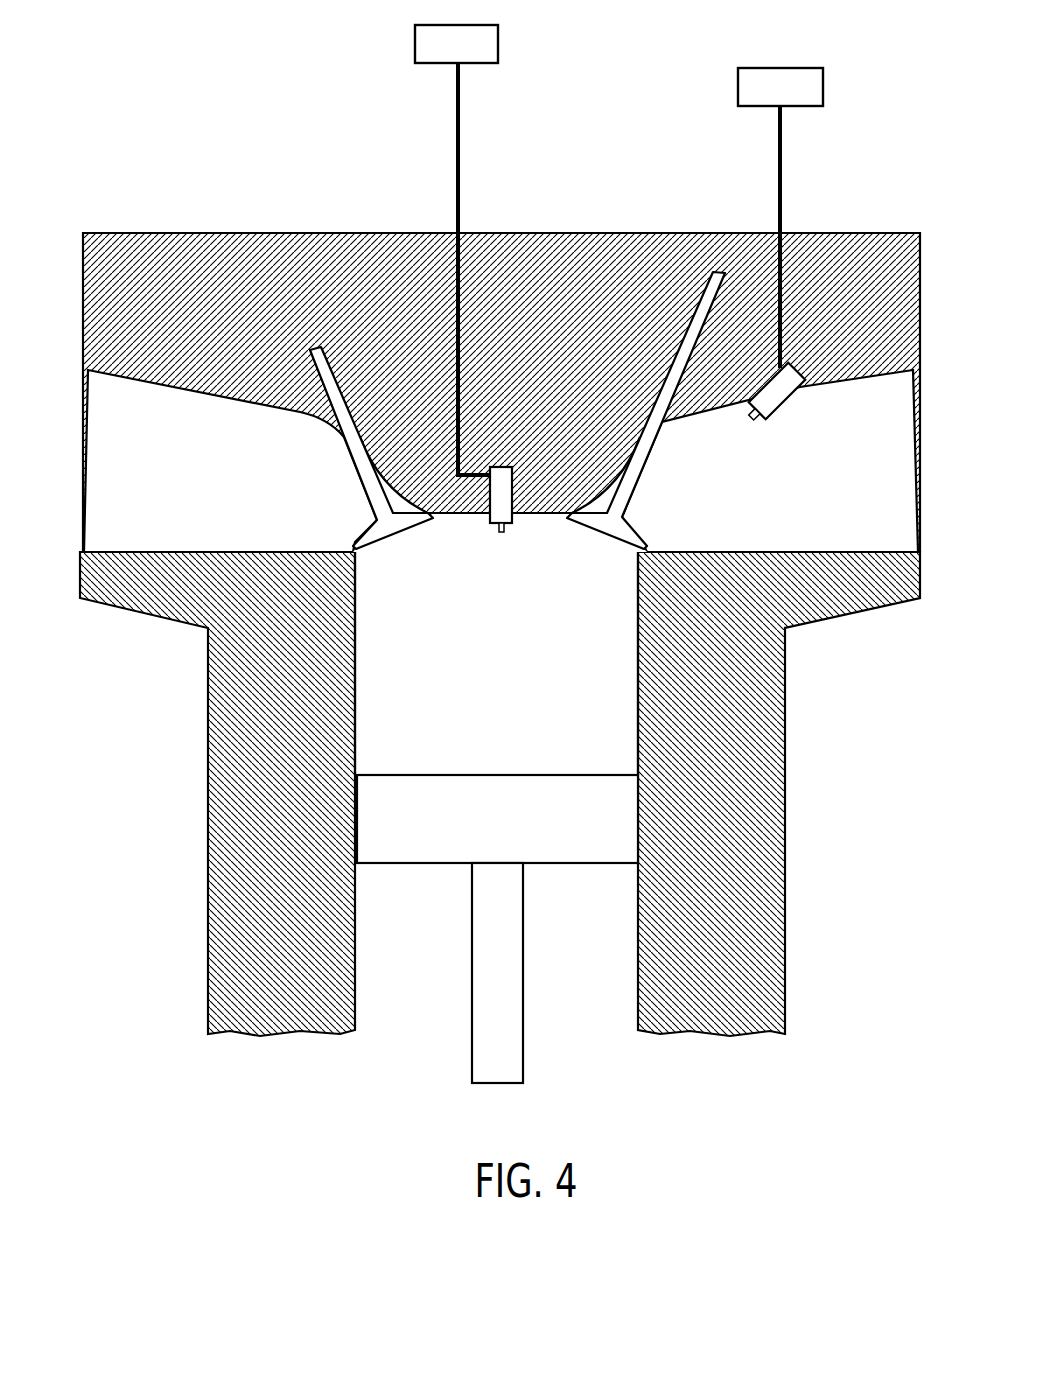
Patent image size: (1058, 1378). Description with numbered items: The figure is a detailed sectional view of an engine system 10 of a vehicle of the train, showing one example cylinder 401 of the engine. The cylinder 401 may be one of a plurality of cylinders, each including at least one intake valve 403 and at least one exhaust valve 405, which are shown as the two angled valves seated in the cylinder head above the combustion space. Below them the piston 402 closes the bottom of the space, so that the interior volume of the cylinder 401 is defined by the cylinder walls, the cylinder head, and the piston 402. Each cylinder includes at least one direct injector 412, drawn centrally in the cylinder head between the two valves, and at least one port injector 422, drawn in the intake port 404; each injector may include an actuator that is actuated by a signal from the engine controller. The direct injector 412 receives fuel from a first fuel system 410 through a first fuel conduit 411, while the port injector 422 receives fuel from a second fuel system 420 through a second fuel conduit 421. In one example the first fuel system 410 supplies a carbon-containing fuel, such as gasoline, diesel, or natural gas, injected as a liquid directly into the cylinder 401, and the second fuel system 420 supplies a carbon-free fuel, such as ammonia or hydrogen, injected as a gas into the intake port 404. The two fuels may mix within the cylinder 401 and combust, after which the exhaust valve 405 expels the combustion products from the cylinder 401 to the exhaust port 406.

The engine 10 is at (840, 178).
The cylinder 401 is at (513, 603).
The piston 402 is at (481, 832).
The intake valve 403 is at (654, 450).
The intake port 404 is at (828, 493).
The exhaust valve 405 is at (340, 440).
The exhaust port 406 is at (250, 485).
The first fuel system 410 is at (440, 55).
The first fuel conduit 411 is at (455, 99).
The direct injector 412 is at (492, 531).
The second fuel system 420 is at (764, 98).
The second fuel conduit 421 is at (777, 151).
The port injector 422 is at (792, 398).